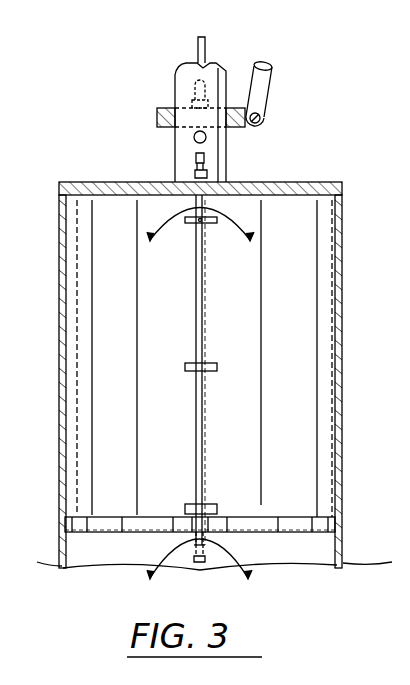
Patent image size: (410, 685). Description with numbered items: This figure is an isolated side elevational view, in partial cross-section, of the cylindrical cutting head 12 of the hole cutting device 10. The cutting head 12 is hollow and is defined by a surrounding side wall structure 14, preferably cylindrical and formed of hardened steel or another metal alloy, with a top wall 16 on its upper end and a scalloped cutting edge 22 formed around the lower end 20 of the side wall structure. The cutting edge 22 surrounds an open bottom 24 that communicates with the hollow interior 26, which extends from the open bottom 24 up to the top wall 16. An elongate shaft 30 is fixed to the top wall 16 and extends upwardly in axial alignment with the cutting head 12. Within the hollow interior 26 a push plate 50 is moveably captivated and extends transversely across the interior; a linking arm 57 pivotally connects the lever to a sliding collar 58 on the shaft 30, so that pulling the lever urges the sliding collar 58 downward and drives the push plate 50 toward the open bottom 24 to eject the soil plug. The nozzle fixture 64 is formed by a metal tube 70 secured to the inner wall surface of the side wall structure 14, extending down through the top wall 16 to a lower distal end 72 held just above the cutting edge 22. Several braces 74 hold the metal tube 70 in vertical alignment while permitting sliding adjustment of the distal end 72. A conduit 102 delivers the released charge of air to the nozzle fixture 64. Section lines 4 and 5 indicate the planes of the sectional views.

The hole cutting device 10 is at (352, 125).
The cutting head 12 is at (345, 211).
The side wall structure 14 is at (340, 312).
The top wall 16 is at (288, 181).
The lower end 20 is at (37, 562).
The cutting edge 22 is at (392, 562).
The open bottom 24 is at (275, 550).
The hollow interior 26 is at (155, 325).
The shaft 30 is at (178, 80).
The push plate 50 is at (285, 518).
The linking arm 57 is at (266, 80).
The sliding collar 58 is at (157, 119).
The nozzle fixture 64 is at (195, 548).
The metal tube 70 is at (203, 457).
The lower distal end 72 is at (205, 565).
The braces 74 is at (195, 223).
The conduit 102 is at (205, 45).
The section line 4- 4 is at (199, 570).
The section line 5- 5 is at (200, 238).